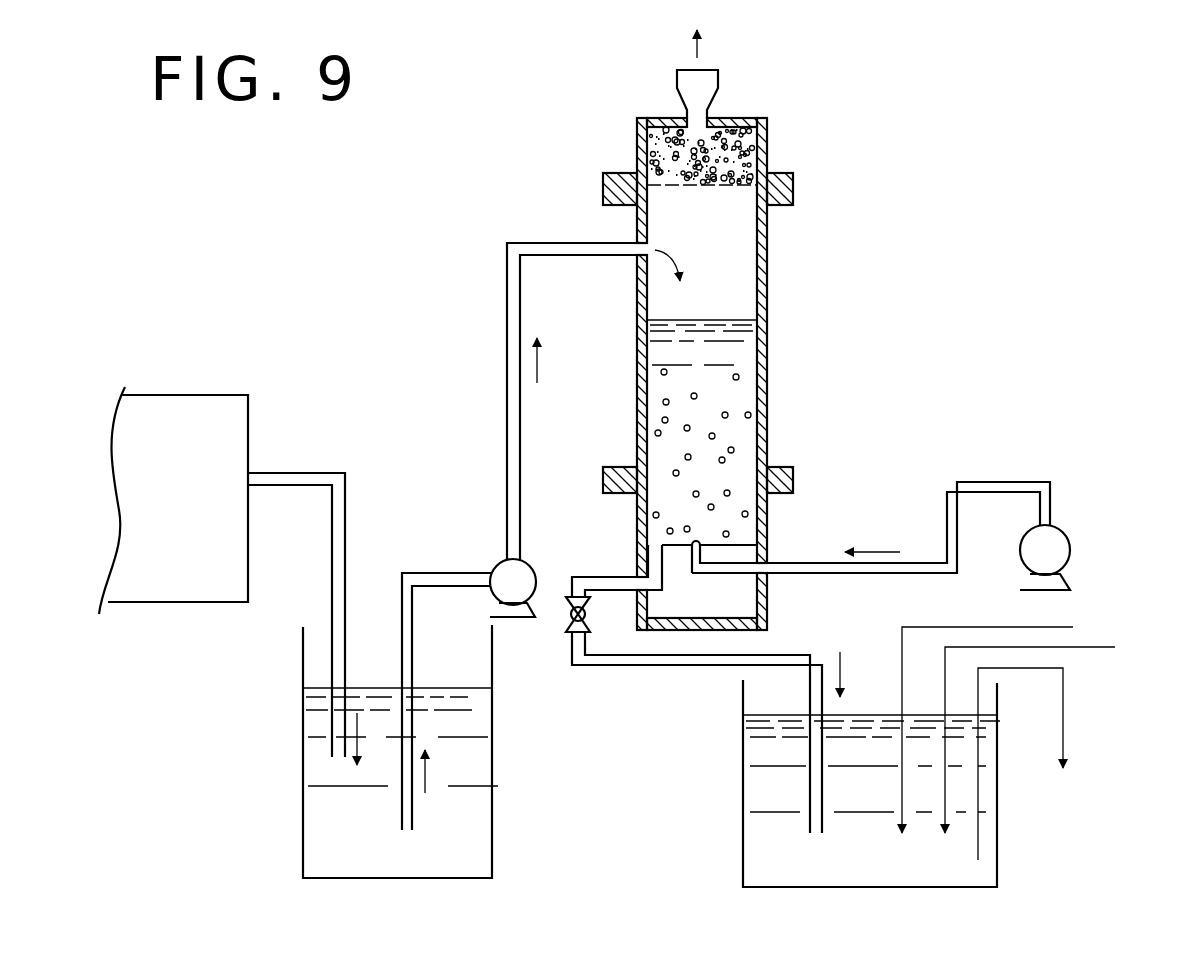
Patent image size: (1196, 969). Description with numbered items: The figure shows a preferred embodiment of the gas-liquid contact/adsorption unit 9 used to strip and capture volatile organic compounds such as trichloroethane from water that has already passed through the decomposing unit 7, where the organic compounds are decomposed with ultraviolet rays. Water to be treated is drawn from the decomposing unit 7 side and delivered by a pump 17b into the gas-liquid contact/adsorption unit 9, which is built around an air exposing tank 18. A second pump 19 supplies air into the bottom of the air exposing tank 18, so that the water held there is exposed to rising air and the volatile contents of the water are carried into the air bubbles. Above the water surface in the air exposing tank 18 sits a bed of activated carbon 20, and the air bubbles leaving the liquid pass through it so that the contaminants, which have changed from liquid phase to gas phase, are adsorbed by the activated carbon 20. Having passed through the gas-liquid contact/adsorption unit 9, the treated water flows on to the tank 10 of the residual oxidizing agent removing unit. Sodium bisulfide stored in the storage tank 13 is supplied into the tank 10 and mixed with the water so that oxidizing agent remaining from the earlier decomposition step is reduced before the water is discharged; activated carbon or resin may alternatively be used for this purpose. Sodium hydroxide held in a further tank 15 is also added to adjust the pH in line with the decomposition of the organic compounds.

The decomposing unit 7 is at (161, 590).
The gas-liquid contact/adsorption unit 9 is at (772, 272).
The tank for the residual oxidizing agent removing unit 10 is at (998, 858).
The storage tank 13 is at (1079, 620).
The tank 15 is at (1121, 640).
The pump 17b is at (500, 571).
The air exposing tank 18 is at (767, 356).
The pump 19 is at (1057, 548).
The activated carbon 20 is at (757, 157).